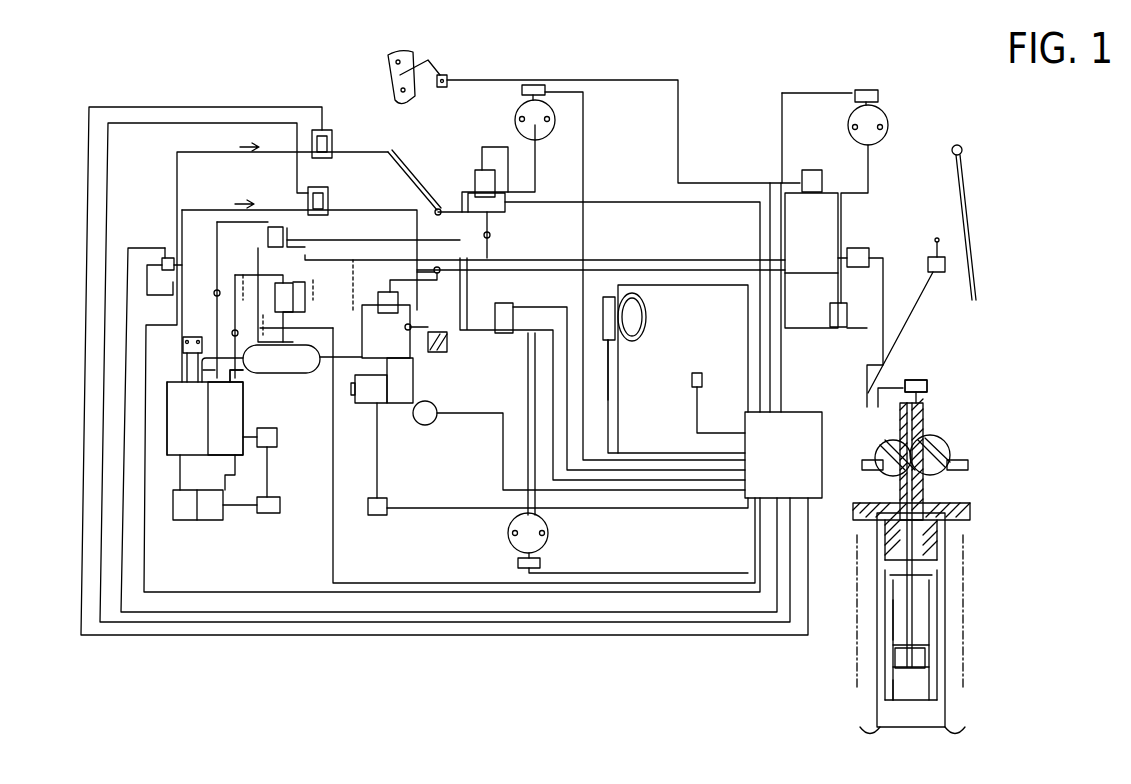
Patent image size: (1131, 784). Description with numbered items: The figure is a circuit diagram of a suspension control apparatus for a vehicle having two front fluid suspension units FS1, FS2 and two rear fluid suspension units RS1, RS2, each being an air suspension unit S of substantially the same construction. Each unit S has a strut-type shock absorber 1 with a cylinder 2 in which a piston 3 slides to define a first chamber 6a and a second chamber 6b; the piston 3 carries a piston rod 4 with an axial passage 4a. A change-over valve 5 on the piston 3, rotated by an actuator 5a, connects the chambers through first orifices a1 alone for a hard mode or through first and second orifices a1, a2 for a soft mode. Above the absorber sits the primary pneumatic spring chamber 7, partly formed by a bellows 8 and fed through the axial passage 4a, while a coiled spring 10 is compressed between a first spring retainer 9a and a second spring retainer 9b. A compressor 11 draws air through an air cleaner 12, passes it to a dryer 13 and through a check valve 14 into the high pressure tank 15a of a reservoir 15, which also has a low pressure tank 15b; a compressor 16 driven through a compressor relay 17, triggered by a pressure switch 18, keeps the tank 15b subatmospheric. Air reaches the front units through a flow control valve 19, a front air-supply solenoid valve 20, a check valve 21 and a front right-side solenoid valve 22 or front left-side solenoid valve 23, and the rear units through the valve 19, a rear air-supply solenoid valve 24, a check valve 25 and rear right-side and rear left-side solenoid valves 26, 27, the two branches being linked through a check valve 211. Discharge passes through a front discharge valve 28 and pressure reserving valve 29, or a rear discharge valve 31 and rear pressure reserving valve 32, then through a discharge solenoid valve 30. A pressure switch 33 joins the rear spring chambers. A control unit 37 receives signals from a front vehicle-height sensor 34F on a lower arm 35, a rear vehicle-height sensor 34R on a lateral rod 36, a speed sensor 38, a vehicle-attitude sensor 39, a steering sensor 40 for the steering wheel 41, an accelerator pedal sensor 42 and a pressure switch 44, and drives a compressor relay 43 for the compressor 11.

The strut-type shock absorber 1 is at (890, 725).
The cylinder 2 is at (940, 630).
The piston 3 is at (940, 680).
The piston rod 4 is at (930, 563).
The axial passage 4a is at (920, 487).
The change-over valve 5 is at (915, 668).
The actuator 5a is at (928, 388).
The first chamber 6a is at (890, 627).
The second chamber 6b is at (895, 690).
The primary pneumatic spring chamber 7 is at (935, 578).
The bellows 8 is at (955, 610).
The first spring retainer 9a is at (972, 512).
The second spring retainer 9b is at (950, 718).
The coiled spring 10 is at (950, 530).
The compressor 11 is at (395, 403).
The air cleaner 12 is at (438, 352).
The dryer 13 is at (300, 372).
The check valve 14 is at (203, 370).
The reservoir 15 is at (172, 458).
The high pressure tank 15a is at (167, 432).
The low pressure tank 15b is at (243, 413).
The compressor 16 is at (210, 520).
The compressor relay 17 is at (268, 513).
The pressure switch 18 is at (277, 437).
The flow control valve 19 is at (180, 270).
The front air-supply solenoid valve 20 is at (332, 142).
The check valve 21 is at (438, 208).
The front right-side solenoid valve 22 is at (475, 178).
The front left-side solenoid valve 23 is at (503, 333).
The rear air-supply solenoid valve 24 is at (328, 197).
The check valve 25 is at (437, 273).
The rear right-side solenoid valve 26 is at (810, 170).
The rear left-side solenoid valve 27 is at (847, 305).
The front discharge valve 28 is at (287, 238).
The pressure reserving valve 29 is at (220, 290).
The discharge solenoid valve 30 is at (386, 325).
The rear discharge valve 31 is at (297, 300).
The rear pressure reserving valve 32 is at (243, 370).
The pressure switch 33 is at (860, 248).
The front vehicle-height sensor 34F is at (440, 87).
The rear vehicle-height sensor 34R is at (930, 257).
The lower arm 35 is at (420, 62).
The lateral rod 36 is at (973, 262).
The control unit 37 is at (803, 412).
The speed sensor 38 is at (612, 375).
The vehicle-attitude sensor 39 is at (698, 373).
The steering sensor 40 is at (612, 340).
The steering wheel 41 is at (648, 315).
The accelerator pedal sensor 42 is at (430, 425).
The compressor relay 43 is at (378, 515).
The pressure switch 44 is at (196, 337).
The check valve 211 is at (490, 237).
The front fluid suspension unit FS1 is at (550, 533).
The front fluid suspension unit FS2 is at (515, 115).
The rear fluid suspension unit RS1 is at (943, 379).
The rear fluid suspension unit RS2 is at (888, 120).
The suspension unit S is at (965, 446).
The first orifices a1 is at (890, 648).
The second orifices a2 is at (895, 667).